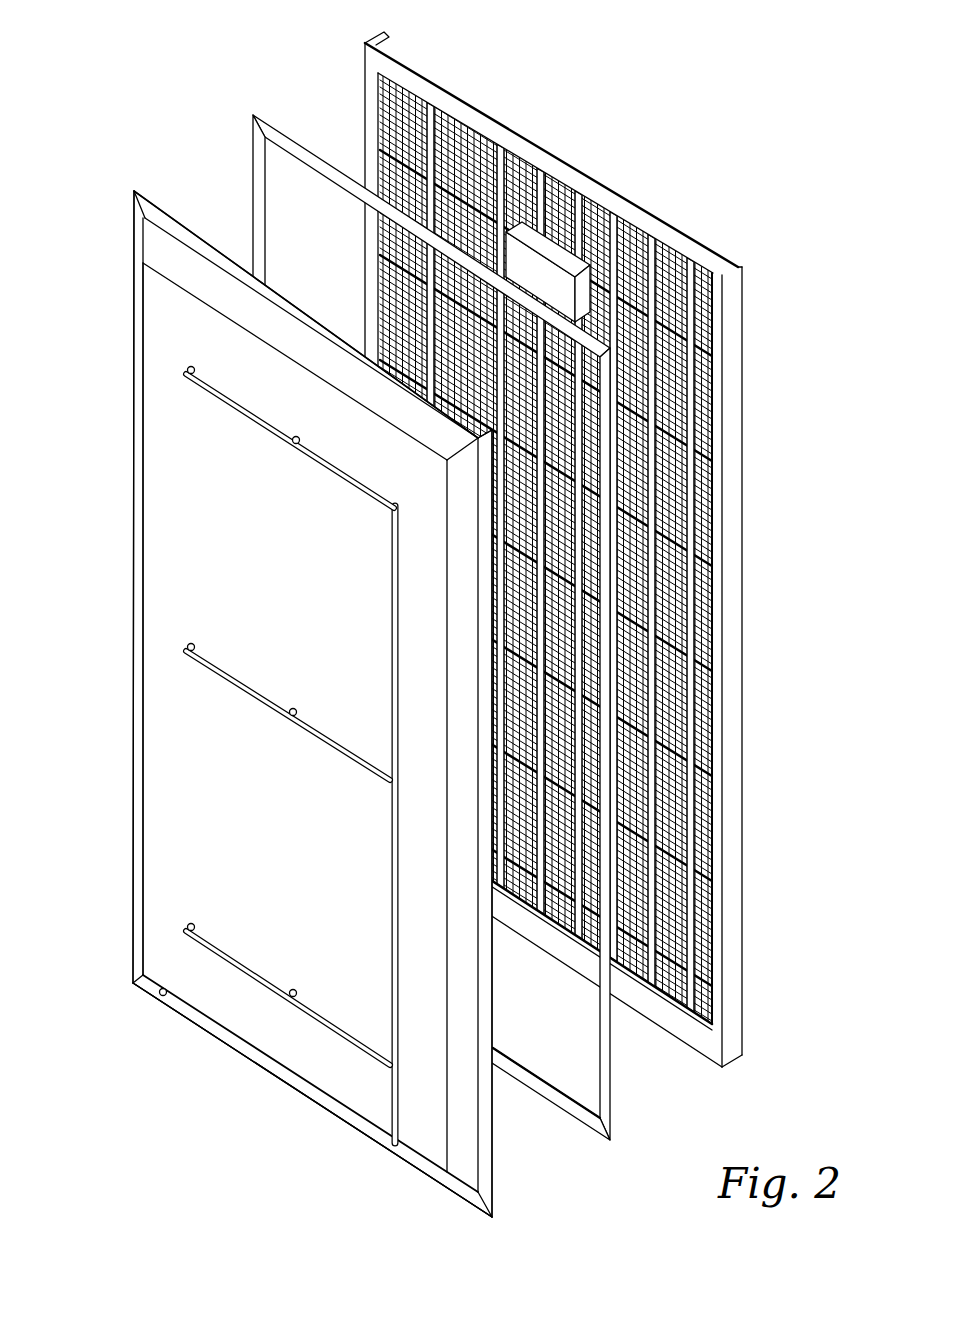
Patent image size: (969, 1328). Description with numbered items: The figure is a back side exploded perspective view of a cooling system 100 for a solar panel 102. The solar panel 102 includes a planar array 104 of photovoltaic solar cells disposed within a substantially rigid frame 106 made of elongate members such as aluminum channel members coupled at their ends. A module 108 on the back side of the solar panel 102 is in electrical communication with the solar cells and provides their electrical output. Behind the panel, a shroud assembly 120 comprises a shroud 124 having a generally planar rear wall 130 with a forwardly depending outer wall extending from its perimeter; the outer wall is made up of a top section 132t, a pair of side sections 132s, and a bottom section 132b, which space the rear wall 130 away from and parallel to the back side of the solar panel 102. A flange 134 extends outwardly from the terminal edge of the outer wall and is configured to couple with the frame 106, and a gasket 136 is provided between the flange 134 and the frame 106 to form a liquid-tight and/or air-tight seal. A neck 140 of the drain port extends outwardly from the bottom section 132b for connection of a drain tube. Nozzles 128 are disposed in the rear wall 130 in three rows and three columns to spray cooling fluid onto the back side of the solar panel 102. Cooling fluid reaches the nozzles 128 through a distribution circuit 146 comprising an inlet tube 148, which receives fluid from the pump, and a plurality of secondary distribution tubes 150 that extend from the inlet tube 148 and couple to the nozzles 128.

The cooling system 100 is at (103, 45).
The solar panel 102 is at (613, 181).
The planar array 104 is at (690, 292).
The frame 106 is at (746, 300).
The module 108 is at (530, 232).
The shroud assembly 120 is at (98, 314).
The shroud 124 is at (158, 428).
The nozzles 128 is at (202, 365).
The rear wall 130 is at (158, 770).
The top section 132t is at (150, 246).
The side sections 132s is at (140, 688).
The bottom section 132b is at (230, 1037).
The flange 134 is at (487, 1200).
The gasket 136 is at (261, 114).
The neck 140 is at (153, 996).
The distribution circuit 146 is at (334, 1052).
The inlet tube 148 is at (400, 1106).
The secondary distribution tubes 150 is at (248, 388).